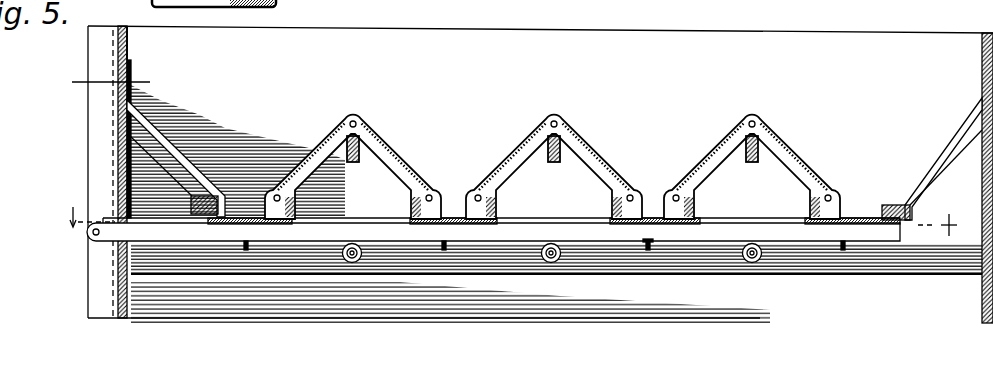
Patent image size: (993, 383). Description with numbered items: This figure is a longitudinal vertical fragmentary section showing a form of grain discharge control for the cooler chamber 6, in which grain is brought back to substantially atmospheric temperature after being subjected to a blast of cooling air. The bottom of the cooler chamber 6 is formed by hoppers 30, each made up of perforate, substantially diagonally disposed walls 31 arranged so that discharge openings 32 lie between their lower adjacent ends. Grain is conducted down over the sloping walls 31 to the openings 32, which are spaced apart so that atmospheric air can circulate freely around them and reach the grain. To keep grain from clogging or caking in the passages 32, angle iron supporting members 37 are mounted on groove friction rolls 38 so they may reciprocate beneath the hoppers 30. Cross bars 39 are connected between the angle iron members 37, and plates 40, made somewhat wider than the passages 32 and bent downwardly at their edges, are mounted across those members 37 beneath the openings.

The cooler chamber 6 is at (505, 154).
The hoppers 30 is at (382, 153).
The perforate substantially diagonally disposed walls 31 is at (583, 162).
The discharge openings 32 is at (635, 210).
The angle iron supporting members 37 is at (420, 237).
The groove friction rolls 38 is at (551, 263).
The cross bars 39 is at (655, 250).
The plates 40 is at (863, 223).